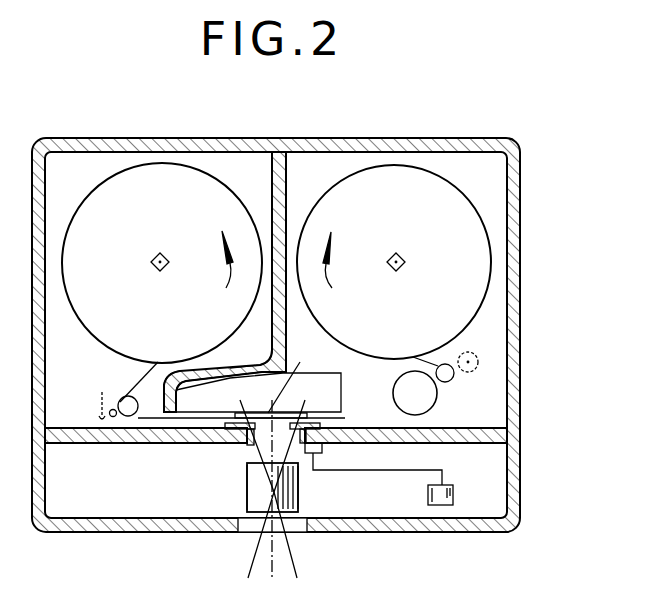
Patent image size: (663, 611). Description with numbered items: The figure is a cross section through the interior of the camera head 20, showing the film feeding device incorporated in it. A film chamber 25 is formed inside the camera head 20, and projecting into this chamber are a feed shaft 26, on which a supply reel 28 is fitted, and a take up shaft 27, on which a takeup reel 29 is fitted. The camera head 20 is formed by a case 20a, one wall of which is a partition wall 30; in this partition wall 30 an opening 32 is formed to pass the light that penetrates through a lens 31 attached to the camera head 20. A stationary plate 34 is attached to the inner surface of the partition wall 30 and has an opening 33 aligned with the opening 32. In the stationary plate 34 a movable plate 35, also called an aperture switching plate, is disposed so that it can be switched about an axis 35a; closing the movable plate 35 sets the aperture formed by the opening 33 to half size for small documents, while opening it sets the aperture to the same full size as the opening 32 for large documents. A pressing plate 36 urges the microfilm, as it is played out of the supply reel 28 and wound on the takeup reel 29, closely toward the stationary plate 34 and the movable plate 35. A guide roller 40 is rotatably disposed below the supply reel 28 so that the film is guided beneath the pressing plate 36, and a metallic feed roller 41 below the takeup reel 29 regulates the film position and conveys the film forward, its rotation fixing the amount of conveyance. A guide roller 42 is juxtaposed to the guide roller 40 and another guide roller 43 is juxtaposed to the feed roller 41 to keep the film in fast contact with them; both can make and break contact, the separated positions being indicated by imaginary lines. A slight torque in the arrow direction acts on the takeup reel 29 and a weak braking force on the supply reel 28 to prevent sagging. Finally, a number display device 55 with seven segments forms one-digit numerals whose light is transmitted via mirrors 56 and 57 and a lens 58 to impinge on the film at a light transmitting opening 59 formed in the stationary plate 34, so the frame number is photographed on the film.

The camera head 20 is at (522, 235).
The case 20a is at (510, 380).
The film chamber 25 is at (311, 172).
The feed shaft 26 is at (165, 255).
The take up shaft 27 is at (402, 255).
The supply reel 28 is at (158, 178).
The takeup reel 29 is at (478, 268).
The partition wall 30 is at (86, 430).
The lens 31 is at (252, 502).
The opening 32 is at (248, 463).
The opening 33 is at (283, 400).
The stationary plate 34 is at (313, 400).
The movable plate 35 is at (247, 443).
The axis 35a is at (262, 415).
The pressing plate 36 is at (232, 378).
The guide roller 40 is at (137, 418).
The feed roller 41 is at (425, 398).
The guide roller 42 is at (110, 408).
The guide roller 43 is at (470, 355).
The number display device 55 is at (442, 505).
The mirror 56 is at (442, 470).
The mirror 57 is at (307, 462).
The lens 58 is at (322, 450).
The light transmitting opening 59 is at (327, 415).